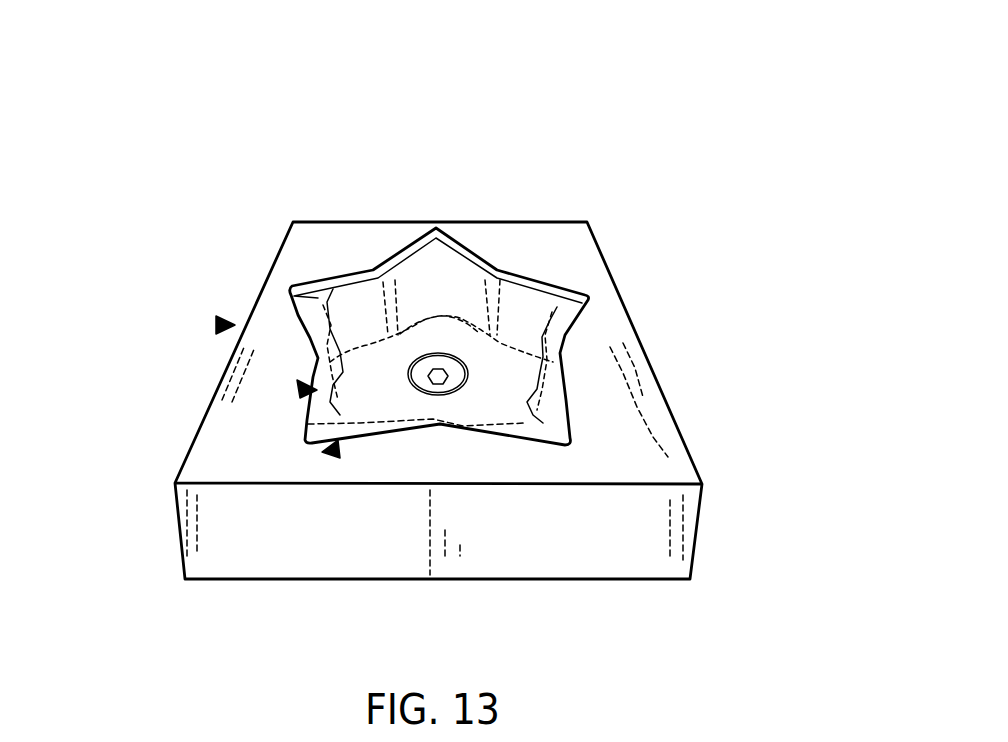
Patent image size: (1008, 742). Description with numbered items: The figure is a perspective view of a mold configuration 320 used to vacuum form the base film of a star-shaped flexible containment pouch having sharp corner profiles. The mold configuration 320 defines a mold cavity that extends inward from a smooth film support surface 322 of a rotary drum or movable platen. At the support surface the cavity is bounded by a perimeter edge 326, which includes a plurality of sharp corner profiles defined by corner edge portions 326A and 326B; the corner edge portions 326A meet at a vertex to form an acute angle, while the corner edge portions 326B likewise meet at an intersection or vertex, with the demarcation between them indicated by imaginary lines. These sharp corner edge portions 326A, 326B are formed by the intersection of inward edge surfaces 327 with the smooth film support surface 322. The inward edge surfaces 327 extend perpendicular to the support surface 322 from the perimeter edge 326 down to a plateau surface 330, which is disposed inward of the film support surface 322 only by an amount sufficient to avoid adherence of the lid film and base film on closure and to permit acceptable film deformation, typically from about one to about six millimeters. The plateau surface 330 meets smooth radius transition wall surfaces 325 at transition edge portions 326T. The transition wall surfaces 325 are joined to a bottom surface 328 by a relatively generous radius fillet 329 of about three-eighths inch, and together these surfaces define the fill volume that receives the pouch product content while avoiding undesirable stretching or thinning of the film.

The mold configuration 320 is at (218, 325).
The smooth film support surface 322 is at (605, 402).
The transition wall surfaces 325 is at (435, 252).
The perimeter edge 326 is at (300, 390).
The sharp corner edge portions 326A is at (422, 245).
The sharp corner edge portions 326B is at (527, 247).
The transition edge portions 326T is at (343, 232).
The inward edge surfaces 327 is at (418, 247).
The bottom surface 328 is at (556, 358).
The radius fillet 329 is at (572, 303).
The plateau surface 330 is at (443, 285).